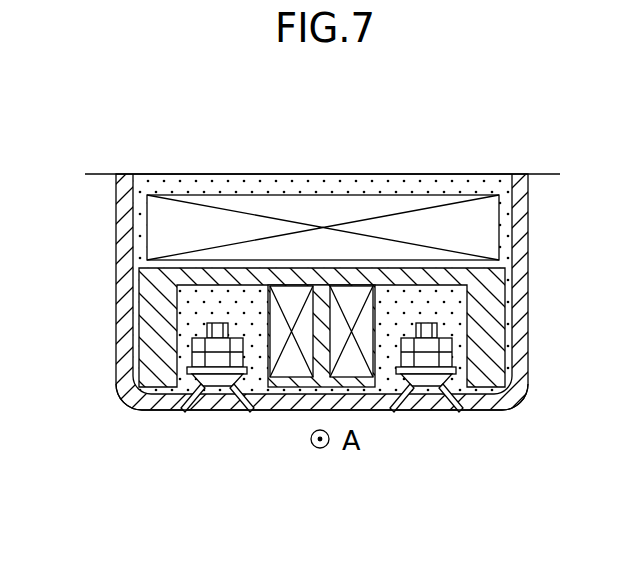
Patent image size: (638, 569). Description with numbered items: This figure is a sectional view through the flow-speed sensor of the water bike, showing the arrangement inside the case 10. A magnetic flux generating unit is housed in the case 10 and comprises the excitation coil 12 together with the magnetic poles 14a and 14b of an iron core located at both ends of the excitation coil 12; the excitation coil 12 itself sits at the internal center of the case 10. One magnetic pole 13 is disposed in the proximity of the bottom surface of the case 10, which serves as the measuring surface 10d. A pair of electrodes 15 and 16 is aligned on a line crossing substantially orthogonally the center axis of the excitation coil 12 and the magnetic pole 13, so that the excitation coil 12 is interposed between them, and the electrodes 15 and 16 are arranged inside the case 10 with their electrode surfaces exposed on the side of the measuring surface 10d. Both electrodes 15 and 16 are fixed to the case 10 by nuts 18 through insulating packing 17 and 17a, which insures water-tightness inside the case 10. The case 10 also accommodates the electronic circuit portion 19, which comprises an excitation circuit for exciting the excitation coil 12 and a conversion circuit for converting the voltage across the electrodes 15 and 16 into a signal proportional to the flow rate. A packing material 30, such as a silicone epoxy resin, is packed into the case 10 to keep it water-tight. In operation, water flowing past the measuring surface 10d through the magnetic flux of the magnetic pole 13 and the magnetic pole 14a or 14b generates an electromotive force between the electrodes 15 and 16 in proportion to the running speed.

The case 10 is at (522, 215).
The measuring surface 10d is at (283, 412).
The excitation coil 12 is at (287, 305).
The magnetic pole 13 is at (368, 383).
The magnetic pole 14a is at (142, 406).
The magnetic pole 14b is at (495, 410).
The electrode 15 is at (226, 404).
The electrode 16 is at (428, 404).
The insulating packing 17 is at (190, 408).
The insulating packing 17a is at (200, 377).
The nut 18 is at (193, 340).
The electronic circuit portion 19 is at (325, 213).
The packing material 30 is at (458, 305).